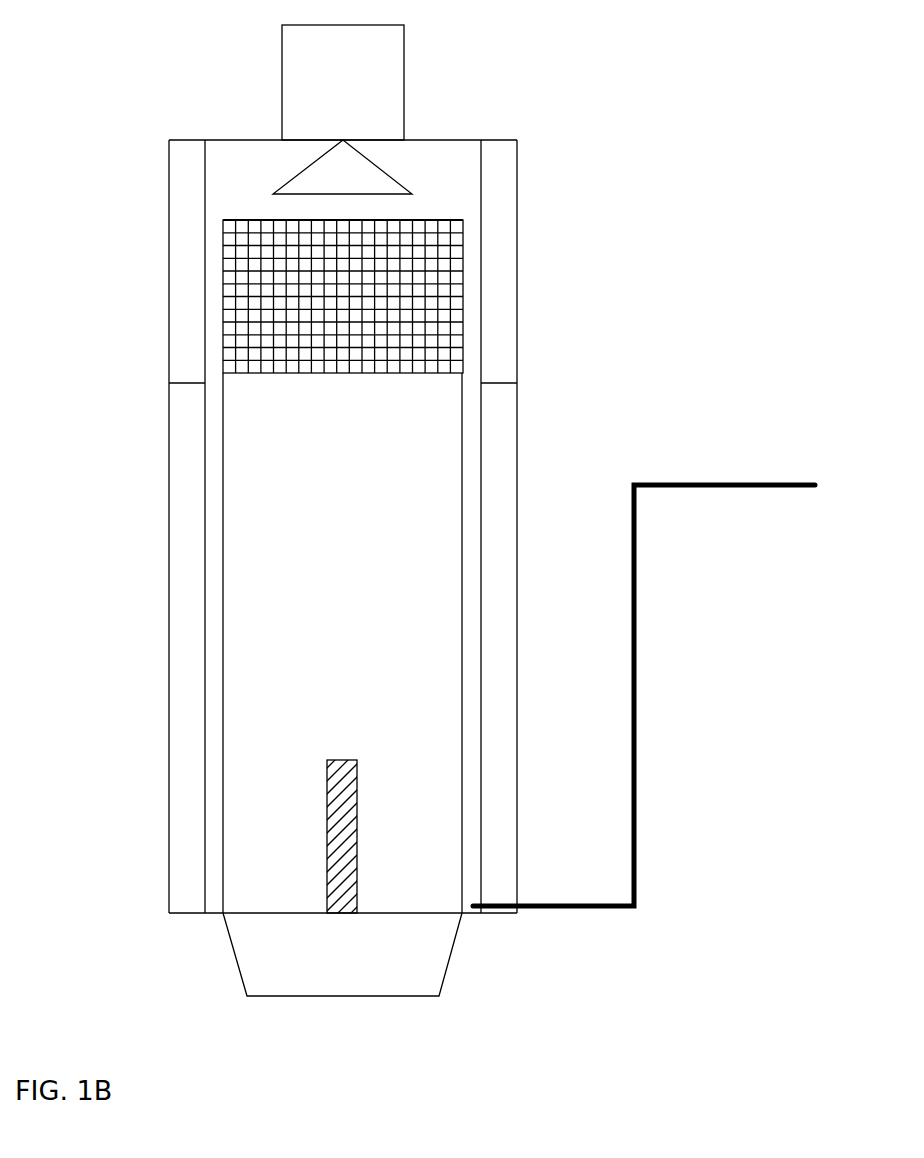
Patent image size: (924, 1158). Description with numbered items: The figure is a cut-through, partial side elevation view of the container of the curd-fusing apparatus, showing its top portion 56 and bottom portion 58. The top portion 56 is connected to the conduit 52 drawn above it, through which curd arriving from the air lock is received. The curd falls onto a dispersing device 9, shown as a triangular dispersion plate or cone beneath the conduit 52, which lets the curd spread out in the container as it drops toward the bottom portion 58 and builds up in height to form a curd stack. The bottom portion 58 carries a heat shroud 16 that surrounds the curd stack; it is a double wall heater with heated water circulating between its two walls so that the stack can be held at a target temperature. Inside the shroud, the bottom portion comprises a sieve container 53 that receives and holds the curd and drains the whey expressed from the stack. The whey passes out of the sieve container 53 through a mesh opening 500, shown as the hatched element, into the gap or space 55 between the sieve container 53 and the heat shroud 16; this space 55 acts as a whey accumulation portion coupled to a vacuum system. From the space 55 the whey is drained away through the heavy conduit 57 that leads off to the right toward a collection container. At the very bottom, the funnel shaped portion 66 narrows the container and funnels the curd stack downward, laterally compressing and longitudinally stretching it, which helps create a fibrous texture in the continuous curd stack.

The conduit 52 is at (375, 63).
The dispersing device 9 is at (320, 174).
The top portion 56 is at (168, 233).
The bottom portion 58 is at (168, 531).
The heat shroud 16 is at (189, 615).
The sieve container 53 is at (462, 512).
The gap or space 55 is at (470, 594).
The mesh opening 500 is at (338, 770).
The funnel shaped portion 66 is at (247, 937).
The conduit 57 is at (638, 633).